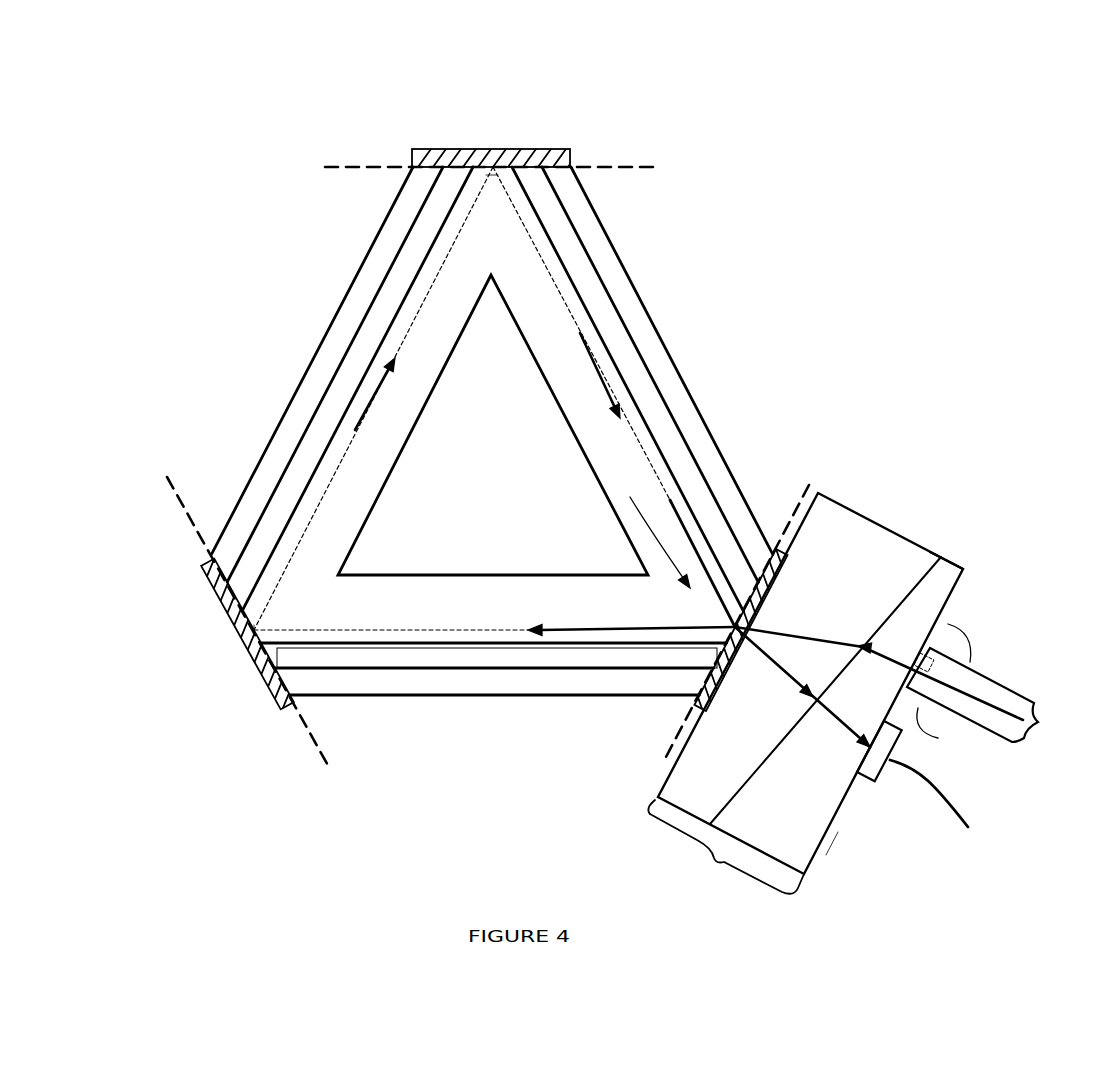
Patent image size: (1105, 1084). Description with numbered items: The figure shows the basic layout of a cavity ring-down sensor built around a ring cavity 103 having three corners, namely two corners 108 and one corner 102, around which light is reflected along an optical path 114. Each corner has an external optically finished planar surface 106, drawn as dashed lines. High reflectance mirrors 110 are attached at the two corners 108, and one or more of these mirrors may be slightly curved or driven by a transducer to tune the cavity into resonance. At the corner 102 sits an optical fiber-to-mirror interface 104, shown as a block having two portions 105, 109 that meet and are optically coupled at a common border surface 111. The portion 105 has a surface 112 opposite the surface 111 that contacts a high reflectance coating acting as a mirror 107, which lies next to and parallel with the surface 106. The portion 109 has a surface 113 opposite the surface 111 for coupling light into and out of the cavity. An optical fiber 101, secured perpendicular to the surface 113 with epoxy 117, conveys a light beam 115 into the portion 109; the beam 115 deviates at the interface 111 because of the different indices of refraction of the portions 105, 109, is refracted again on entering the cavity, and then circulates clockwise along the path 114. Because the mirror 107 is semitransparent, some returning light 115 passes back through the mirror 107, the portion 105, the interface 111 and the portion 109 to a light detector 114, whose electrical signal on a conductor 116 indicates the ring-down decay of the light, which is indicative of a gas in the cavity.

The optical fiber 101 is at (973, 670).
The corner 102 is at (650, 527).
The ring cavity 103 is at (716, 311).
The optical fiber-to-mirror interface 104 is at (712, 868).
The portion 105 is at (870, 520).
The planar surface 106 is at (573, 166).
The mirror 107 is at (731, 624).
The corner 108 is at (489, 170).
The portion 109 is at (950, 560).
The high reflectance mirror 110 is at (463, 150).
The common border surface 111 is at (767, 755).
The surface 112 is at (640, 808).
The surface 113 is at (838, 832).
The optical path 114 is at (530, 238).
The light beam 115 is at (363, 420).
The conductor 116 is at (937, 790).
The epoxy 117 is at (950, 630).